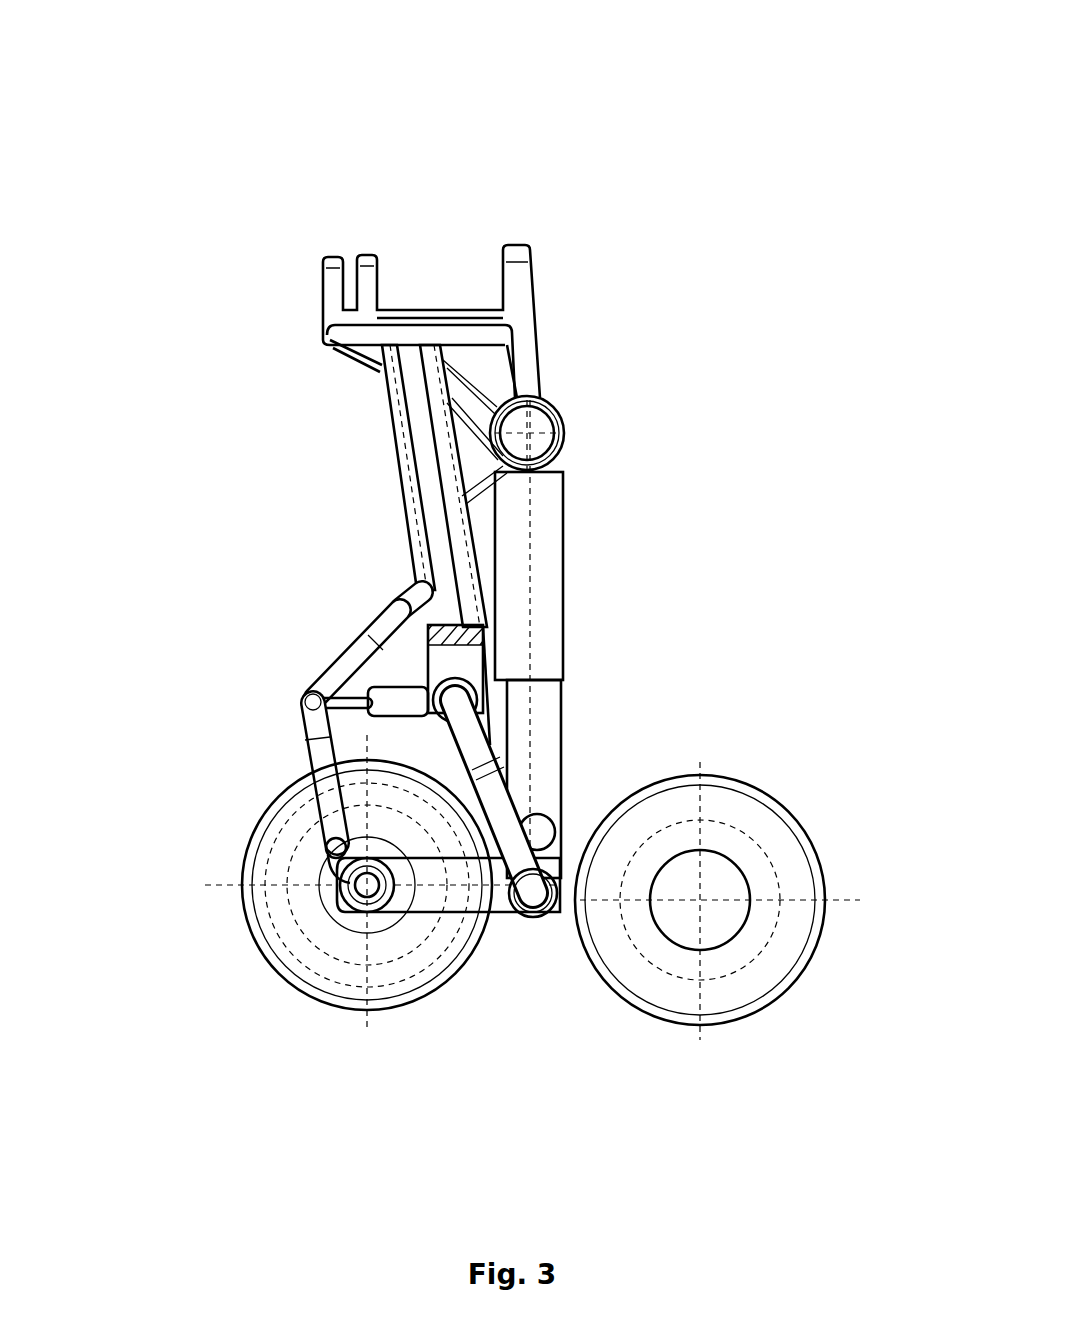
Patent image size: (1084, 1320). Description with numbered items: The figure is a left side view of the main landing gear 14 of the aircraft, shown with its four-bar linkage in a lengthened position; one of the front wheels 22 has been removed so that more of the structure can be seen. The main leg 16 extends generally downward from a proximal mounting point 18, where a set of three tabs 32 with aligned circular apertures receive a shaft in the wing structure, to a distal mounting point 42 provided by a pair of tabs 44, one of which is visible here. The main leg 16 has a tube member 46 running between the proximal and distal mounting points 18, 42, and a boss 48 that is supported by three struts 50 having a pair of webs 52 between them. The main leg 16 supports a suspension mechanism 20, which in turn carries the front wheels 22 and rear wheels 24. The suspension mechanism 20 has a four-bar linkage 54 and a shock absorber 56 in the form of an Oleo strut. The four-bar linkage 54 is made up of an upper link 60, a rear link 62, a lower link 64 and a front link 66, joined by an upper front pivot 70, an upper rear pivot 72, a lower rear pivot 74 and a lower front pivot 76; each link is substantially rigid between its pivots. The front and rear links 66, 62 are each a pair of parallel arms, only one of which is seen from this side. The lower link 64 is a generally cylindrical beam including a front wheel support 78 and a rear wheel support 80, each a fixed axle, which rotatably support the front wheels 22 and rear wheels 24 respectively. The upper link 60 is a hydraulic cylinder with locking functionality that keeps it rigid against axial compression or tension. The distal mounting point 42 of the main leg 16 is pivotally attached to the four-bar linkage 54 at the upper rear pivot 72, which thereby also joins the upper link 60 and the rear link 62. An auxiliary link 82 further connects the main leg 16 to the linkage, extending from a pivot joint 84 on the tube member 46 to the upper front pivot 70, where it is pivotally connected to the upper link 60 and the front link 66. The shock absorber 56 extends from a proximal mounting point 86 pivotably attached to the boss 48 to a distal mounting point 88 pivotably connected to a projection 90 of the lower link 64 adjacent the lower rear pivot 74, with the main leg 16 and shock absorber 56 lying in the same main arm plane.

The main landing gear 14 is at (200, 125).
The main leg 16 is at (247, 357).
The proximal mounting point 18 is at (583, 217).
The suspension mechanism 20 is at (635, 615).
The front wheels 22 is at (280, 970).
The rear wheels 24 is at (775, 960).
The tabs 32 is at (510, 250).
The distal mounting point 42 is at (492, 640).
The tabs 44 is at (465, 662).
The tube member 46 is at (433, 540).
The boss 48 is at (563, 440).
The struts 50 is at (447, 400).
The webs 52 is at (470, 357).
The four-bar linkage 54 is at (273, 712).
The shock absorber 56 is at (545, 698).
The upper link 60 is at (485, 628).
The rear link 62 is at (492, 797).
The lower link 64 is at (445, 900).
The front link 66 is at (317, 758).
The upper front pivot 70 is at (300, 697).
The upper rear pivot 72 is at (453, 705).
The lower rear pivot 74 is at (535, 897).
The lower front pivot 76 is at (330, 843).
The front wheel support 78 is at (358, 898).
The rear wheel support 80 is at (622, 1002).
The auxiliary link 82 is at (342, 663).
The pivot joint 84 is at (387, 607).
The proximal mounting point 86 is at (587, 468).
The distal mounting point 88 is at (568, 803).
The projection 90 is at (553, 862).